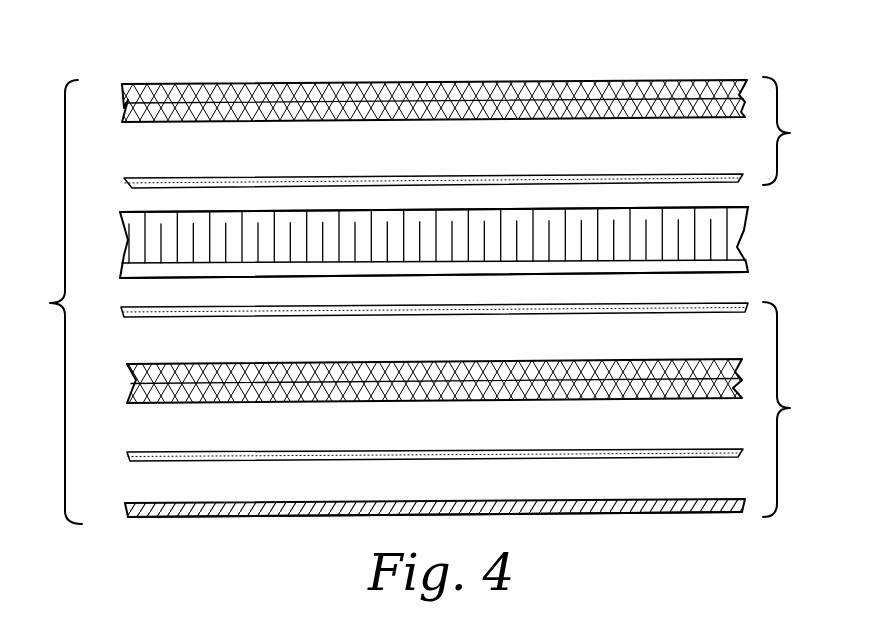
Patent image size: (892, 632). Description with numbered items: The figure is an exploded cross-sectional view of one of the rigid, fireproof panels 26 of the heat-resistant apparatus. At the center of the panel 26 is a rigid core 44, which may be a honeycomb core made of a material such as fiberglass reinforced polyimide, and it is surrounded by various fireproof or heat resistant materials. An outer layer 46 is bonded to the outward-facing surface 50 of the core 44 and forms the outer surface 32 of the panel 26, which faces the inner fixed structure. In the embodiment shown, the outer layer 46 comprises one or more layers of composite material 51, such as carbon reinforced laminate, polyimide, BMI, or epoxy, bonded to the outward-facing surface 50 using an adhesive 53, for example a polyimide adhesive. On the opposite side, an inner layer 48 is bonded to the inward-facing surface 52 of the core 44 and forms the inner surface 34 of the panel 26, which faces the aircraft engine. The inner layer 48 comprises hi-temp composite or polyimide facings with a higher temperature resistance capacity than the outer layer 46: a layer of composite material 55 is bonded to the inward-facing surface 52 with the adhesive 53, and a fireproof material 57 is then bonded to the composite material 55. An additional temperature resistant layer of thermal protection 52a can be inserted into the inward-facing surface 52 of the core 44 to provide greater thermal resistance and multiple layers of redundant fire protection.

The panel 26 is at (49, 302).
The outer surface 32 is at (468, 82).
The composite material 51 is at (645, 82).
The adhesive 53 is at (515, 184).
The outer layer 46 is at (796, 131).
The rigid core 44 is at (713, 218).
The outward-facing surface 50 is at (160, 213).
The inward-facing surface 52 is at (688, 276).
The layer of thermal protection 52a is at (152, 262).
The composite material 55 is at (403, 405).
The inner layer 48 is at (796, 409).
The inner surface 34 is at (287, 520).
The fireproof material 57 is at (632, 514).